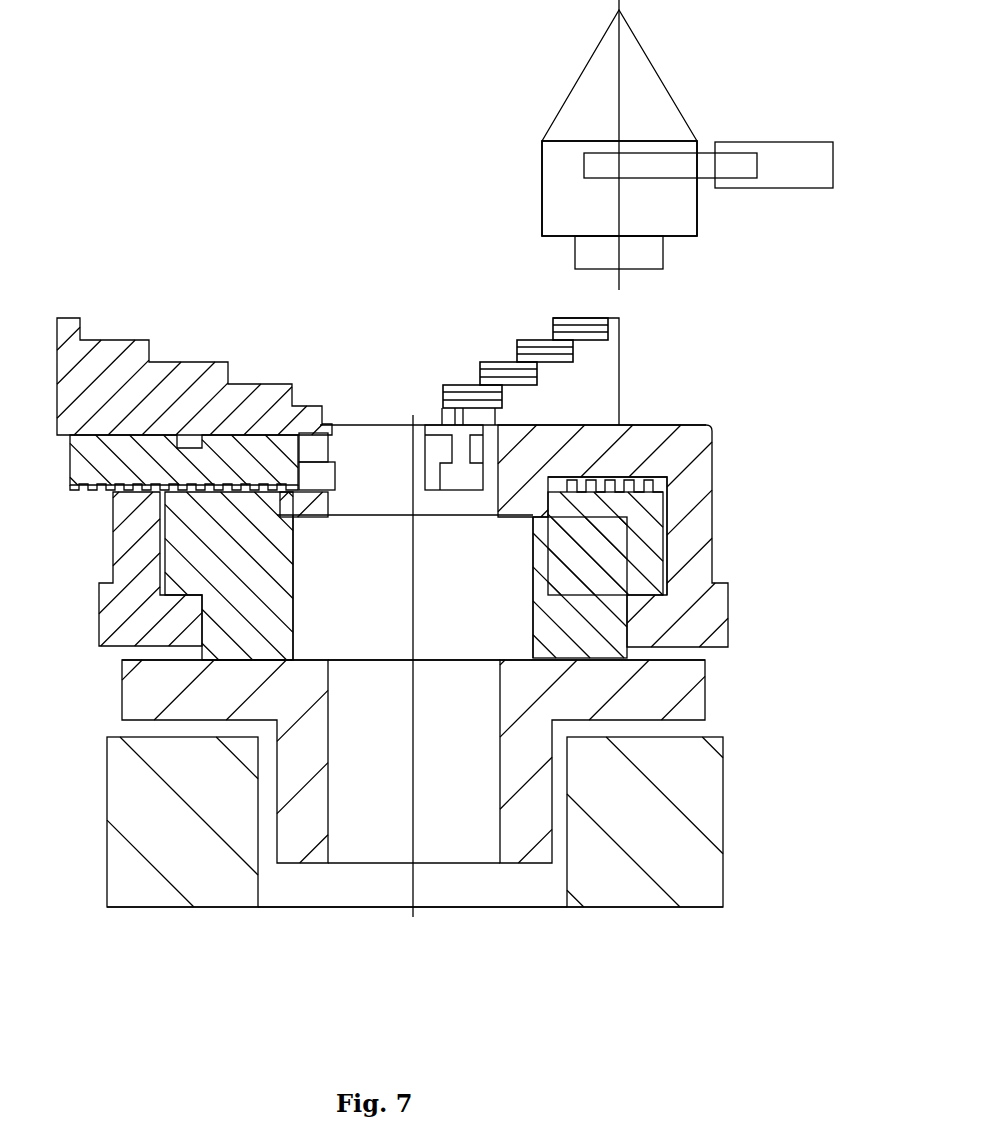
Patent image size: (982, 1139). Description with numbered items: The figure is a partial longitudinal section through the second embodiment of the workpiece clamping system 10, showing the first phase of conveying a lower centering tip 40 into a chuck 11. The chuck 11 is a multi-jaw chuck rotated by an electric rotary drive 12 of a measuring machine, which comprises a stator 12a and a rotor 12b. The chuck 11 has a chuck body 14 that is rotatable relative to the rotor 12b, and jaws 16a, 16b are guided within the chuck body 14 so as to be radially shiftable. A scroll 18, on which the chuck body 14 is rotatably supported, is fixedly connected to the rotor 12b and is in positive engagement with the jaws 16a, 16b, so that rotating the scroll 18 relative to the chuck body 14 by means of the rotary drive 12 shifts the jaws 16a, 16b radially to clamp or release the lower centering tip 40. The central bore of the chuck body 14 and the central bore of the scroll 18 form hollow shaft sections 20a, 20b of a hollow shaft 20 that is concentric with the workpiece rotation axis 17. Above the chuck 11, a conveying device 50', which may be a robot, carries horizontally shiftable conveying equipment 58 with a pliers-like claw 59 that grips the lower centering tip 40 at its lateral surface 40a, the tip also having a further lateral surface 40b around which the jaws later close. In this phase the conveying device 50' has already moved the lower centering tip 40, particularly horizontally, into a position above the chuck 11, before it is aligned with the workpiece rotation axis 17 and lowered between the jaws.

The workpiece clamping system 10 is at (313, 340).
The chuck 11 is at (655, 345).
The electric rotary drive 12 is at (772, 675).
The stator 12a is at (697, 778).
The rotor 12b is at (655, 700).
The chuck body 14 is at (700, 475).
The jaw 16a is at (597, 383).
The jaw 16b is at (212, 370).
The workpiece rotation axis 17 is at (413, 457).
The scroll 18 is at (620, 520).
The hollow shaft 20 is at (475, 583).
The hollow shaft section 20a is at (318, 405).
The hollow shaft section 20b is at (515, 551).
The lower centering tip 40 is at (562, 200).
The lateral surface 40a is at (697, 222).
The lateral surface 40b is at (663, 258).
The conveying device 50' is at (653, 154).
The conveying equipment 58 is at (776, 168).
The claw 59 is at (697, 166).